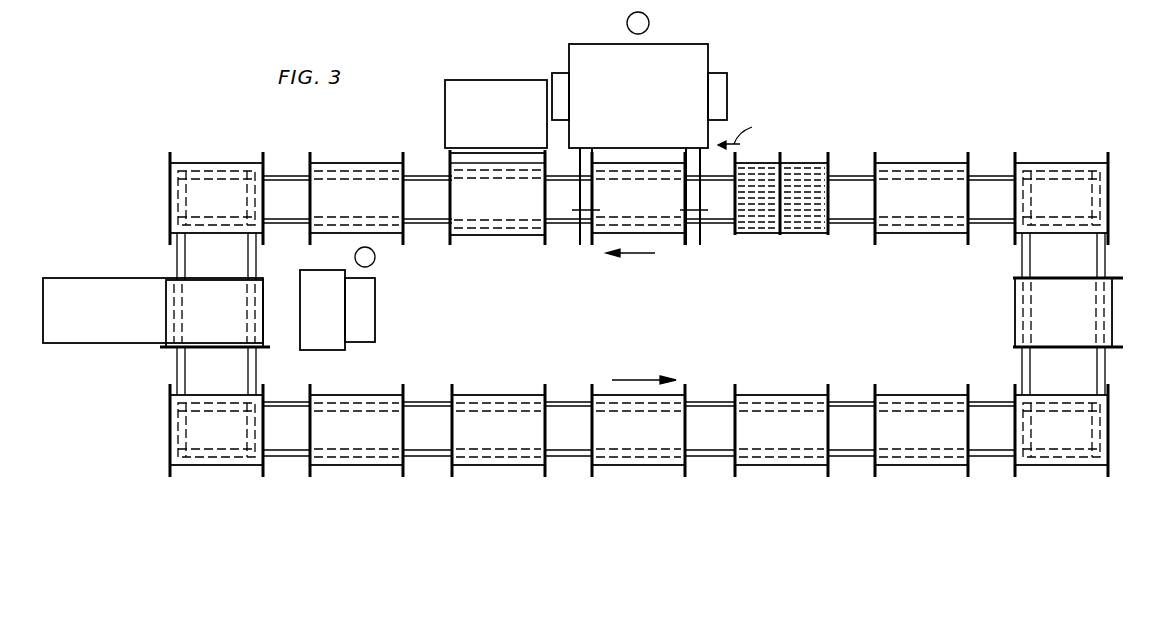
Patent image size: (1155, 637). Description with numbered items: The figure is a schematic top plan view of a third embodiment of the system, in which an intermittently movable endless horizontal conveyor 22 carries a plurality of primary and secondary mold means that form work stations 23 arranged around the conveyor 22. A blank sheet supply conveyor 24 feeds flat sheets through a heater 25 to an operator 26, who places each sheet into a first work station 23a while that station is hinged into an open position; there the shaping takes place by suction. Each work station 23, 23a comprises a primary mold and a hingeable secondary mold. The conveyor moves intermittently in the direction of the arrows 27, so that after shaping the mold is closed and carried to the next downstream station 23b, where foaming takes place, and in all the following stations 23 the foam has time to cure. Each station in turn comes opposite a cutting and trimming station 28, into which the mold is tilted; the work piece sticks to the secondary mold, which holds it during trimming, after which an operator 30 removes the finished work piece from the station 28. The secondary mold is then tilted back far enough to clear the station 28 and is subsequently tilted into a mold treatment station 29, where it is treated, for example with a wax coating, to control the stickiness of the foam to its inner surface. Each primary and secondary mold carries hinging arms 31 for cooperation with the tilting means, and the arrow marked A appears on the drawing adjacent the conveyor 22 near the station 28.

The endless horizontal conveyor 22 is at (990, 182).
The work station 23 is at (1040, 213).
The first work station 23a is at (364, 208).
The downstream station 23b is at (233, 208).
The blank sheet supply conveyor 24 is at (106, 278).
The heater 25 is at (312, 282).
The operator 26 is at (375, 259).
The arrows 27 is at (636, 255).
The cutting and trimming station 28 is at (670, 103).
The mold treatment station 29 is at (503, 118).
The operator 30 is at (649, 23).
The hinging arms 31 is at (582, 205).
The direction arrow A is at (744, 134).